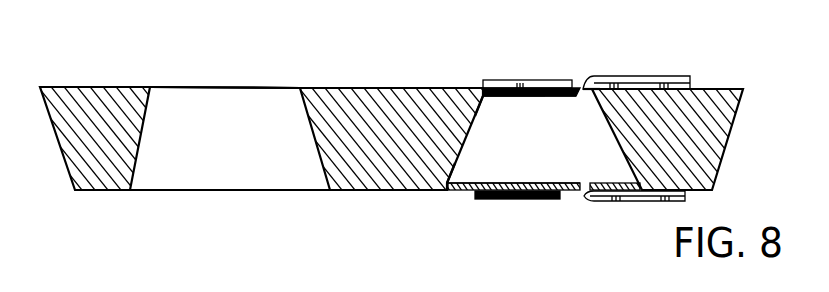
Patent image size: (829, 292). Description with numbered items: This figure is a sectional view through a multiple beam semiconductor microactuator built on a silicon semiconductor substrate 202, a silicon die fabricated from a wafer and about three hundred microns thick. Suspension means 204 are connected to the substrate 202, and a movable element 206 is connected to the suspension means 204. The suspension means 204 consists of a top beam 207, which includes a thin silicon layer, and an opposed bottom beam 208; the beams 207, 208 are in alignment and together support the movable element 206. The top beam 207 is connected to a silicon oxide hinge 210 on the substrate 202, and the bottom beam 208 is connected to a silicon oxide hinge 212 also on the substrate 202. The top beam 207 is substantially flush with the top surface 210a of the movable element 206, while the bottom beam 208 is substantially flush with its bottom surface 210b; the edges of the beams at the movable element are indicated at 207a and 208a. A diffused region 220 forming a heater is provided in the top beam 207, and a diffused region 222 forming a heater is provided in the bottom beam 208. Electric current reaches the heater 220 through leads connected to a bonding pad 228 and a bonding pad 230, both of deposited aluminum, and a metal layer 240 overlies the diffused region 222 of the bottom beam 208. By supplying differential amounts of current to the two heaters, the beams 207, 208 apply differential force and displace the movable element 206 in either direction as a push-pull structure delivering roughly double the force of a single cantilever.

The silicon semiconductor substrate 202 is at (730, 148).
The suspension means 204 is at (530, 80).
The movable element 206 is at (305, 88).
The top beam 207 is at (546, 97).
The upper bonding layer edge 207a is at (478, 116).
The bottom beam 208 is at (553, 183).
The lower bonding layer edge 208a is at (447, 166).
The silicon oxide hinge 210 is at (584, 88).
The top surface 210a is at (413, 88).
The bottom surface 210b is at (382, 192).
The silicon oxide hinge 212 is at (585, 197).
The diffused region 220 is at (531, 97).
The diffused region 222 is at (522, 183).
The bonding pad 228 is at (684, 76).
The bonding pad 230 is at (497, 79).
The metal layer 240 is at (538, 199).